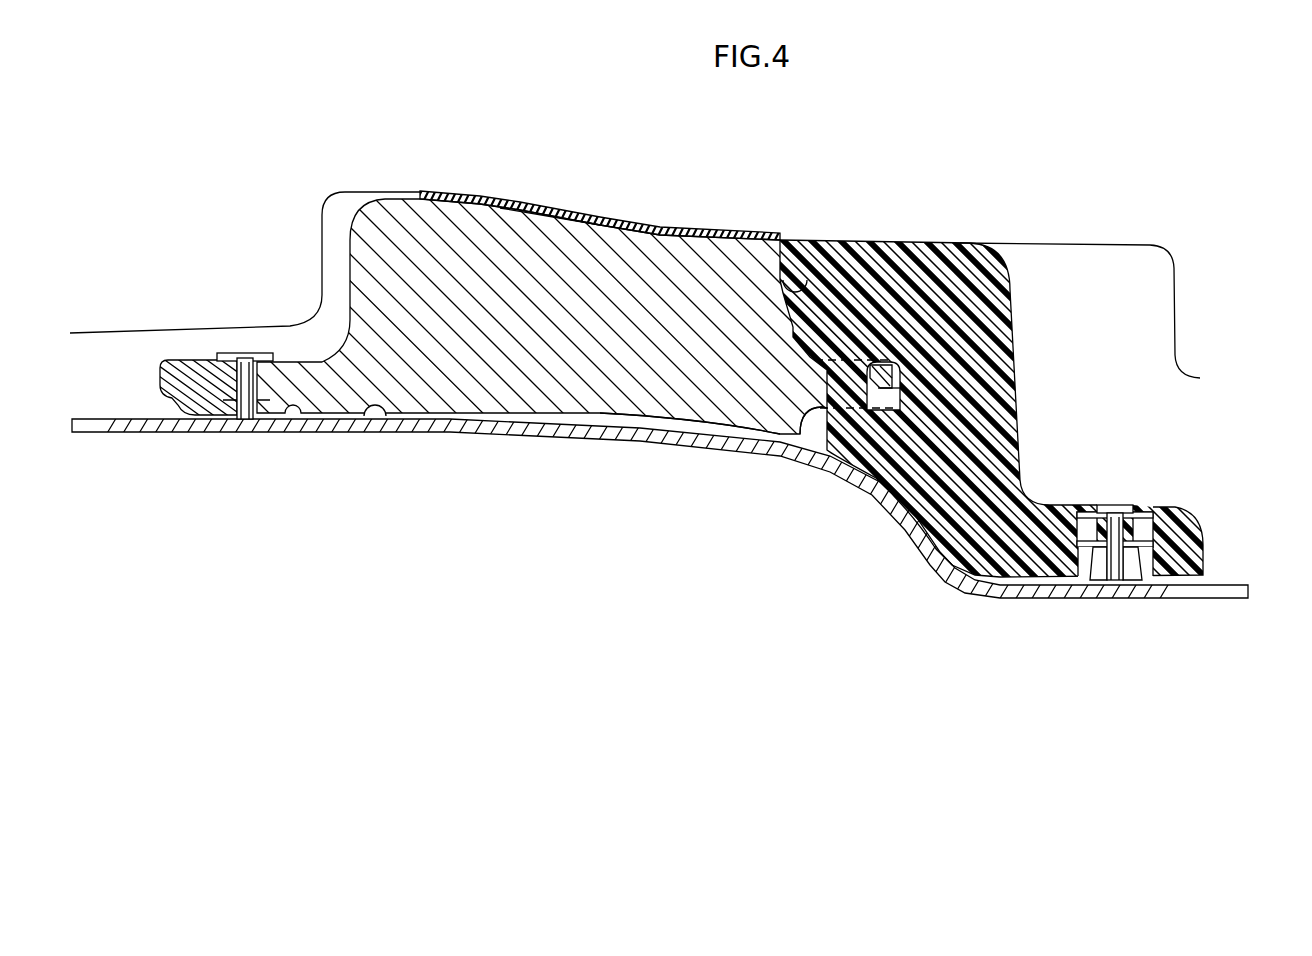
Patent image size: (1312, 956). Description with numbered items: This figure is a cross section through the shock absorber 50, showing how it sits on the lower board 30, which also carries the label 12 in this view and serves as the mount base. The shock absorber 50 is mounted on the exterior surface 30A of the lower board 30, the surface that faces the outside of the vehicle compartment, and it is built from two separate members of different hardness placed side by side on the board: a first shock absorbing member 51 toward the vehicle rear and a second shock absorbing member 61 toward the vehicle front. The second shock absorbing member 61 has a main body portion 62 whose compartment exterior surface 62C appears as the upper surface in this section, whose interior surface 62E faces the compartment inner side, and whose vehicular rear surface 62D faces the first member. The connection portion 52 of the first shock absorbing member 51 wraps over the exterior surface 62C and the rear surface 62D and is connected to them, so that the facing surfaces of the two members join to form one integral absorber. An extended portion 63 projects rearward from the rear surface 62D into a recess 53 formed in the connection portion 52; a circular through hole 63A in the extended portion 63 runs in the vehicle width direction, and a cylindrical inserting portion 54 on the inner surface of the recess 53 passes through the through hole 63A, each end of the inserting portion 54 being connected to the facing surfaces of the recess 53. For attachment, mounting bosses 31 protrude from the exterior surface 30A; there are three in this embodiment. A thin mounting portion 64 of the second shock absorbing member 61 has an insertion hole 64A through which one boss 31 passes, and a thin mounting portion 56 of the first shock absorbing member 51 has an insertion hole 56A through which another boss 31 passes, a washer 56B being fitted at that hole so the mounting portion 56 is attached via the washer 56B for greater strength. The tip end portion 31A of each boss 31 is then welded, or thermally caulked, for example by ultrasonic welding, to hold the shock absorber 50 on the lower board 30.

The vehicle body 12 is at (638, 507).
The lower board 30 is at (572, 430).
The exterior surface 30A is at (387, 420).
The mounting boss 31 is at (260, 410).
The tip end portion 31A is at (242, 365).
The shock absorber 50 is at (635, 247).
The first shock absorbing member 51 is at (1019, 274).
The connection portion 52 is at (613, 227).
The recess 53 is at (890, 400).
The inserting portion 54 is at (835, 402).
The mounting portion 56 is at (1187, 527).
The insertion hole 56A is at (1120, 530).
The washer 56B is at (1143, 507).
The second shock absorbing member 61 is at (361, 218).
The main body portion 62 is at (528, 338).
The compartment exterior surface 62C is at (553, 212).
The vehicular rear surface 62D is at (808, 277).
The interior surface 62E is at (662, 420).
The extended portion 63 is at (891, 358).
The through hole 63A is at (853, 358).
The mounting portion 64 is at (190, 384).
The insertion hole 64A is at (241, 400).